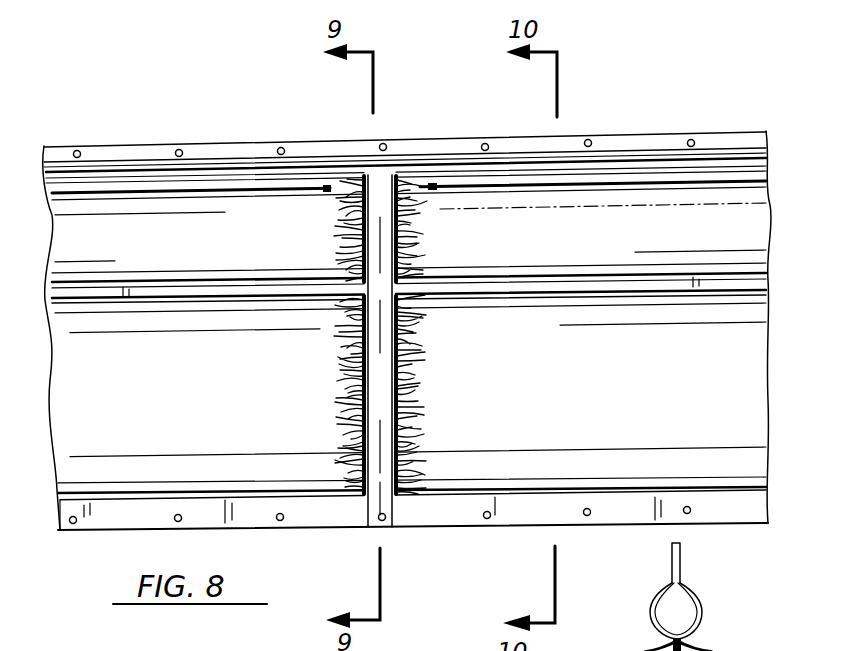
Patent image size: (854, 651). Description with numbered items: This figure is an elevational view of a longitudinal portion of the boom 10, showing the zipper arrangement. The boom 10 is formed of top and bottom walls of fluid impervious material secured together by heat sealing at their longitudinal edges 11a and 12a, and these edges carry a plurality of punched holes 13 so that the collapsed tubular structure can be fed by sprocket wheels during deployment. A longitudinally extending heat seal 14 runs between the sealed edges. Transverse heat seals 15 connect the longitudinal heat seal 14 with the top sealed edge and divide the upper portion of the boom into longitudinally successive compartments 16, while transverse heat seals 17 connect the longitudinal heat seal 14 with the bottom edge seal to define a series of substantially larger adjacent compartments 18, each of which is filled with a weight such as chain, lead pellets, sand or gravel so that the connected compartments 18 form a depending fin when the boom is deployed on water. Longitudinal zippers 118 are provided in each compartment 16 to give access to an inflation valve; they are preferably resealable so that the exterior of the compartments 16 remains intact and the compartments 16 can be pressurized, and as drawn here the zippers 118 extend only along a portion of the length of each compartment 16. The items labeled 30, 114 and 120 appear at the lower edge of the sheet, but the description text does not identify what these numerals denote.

The boom 10 is at (622, 121).
The longitudinal edge 11a is at (121, 536).
The longitudinal edge 12a is at (214, 146).
The punched holes 13 is at (284, 148).
The longitudinal heat seal 14 is at (165, 294).
The transverse heat seals 15 is at (388, 180).
The compartments 16 is at (752, 222).
The transverse heat seals 17 is at (383, 377).
The compartments 18 is at (635, 395).
The hanger clip 30 is at (703, 590).
The fastener 114 is at (780, 650).
The zippers 118 is at (252, 204).
The base flange 120 is at (625, 648).